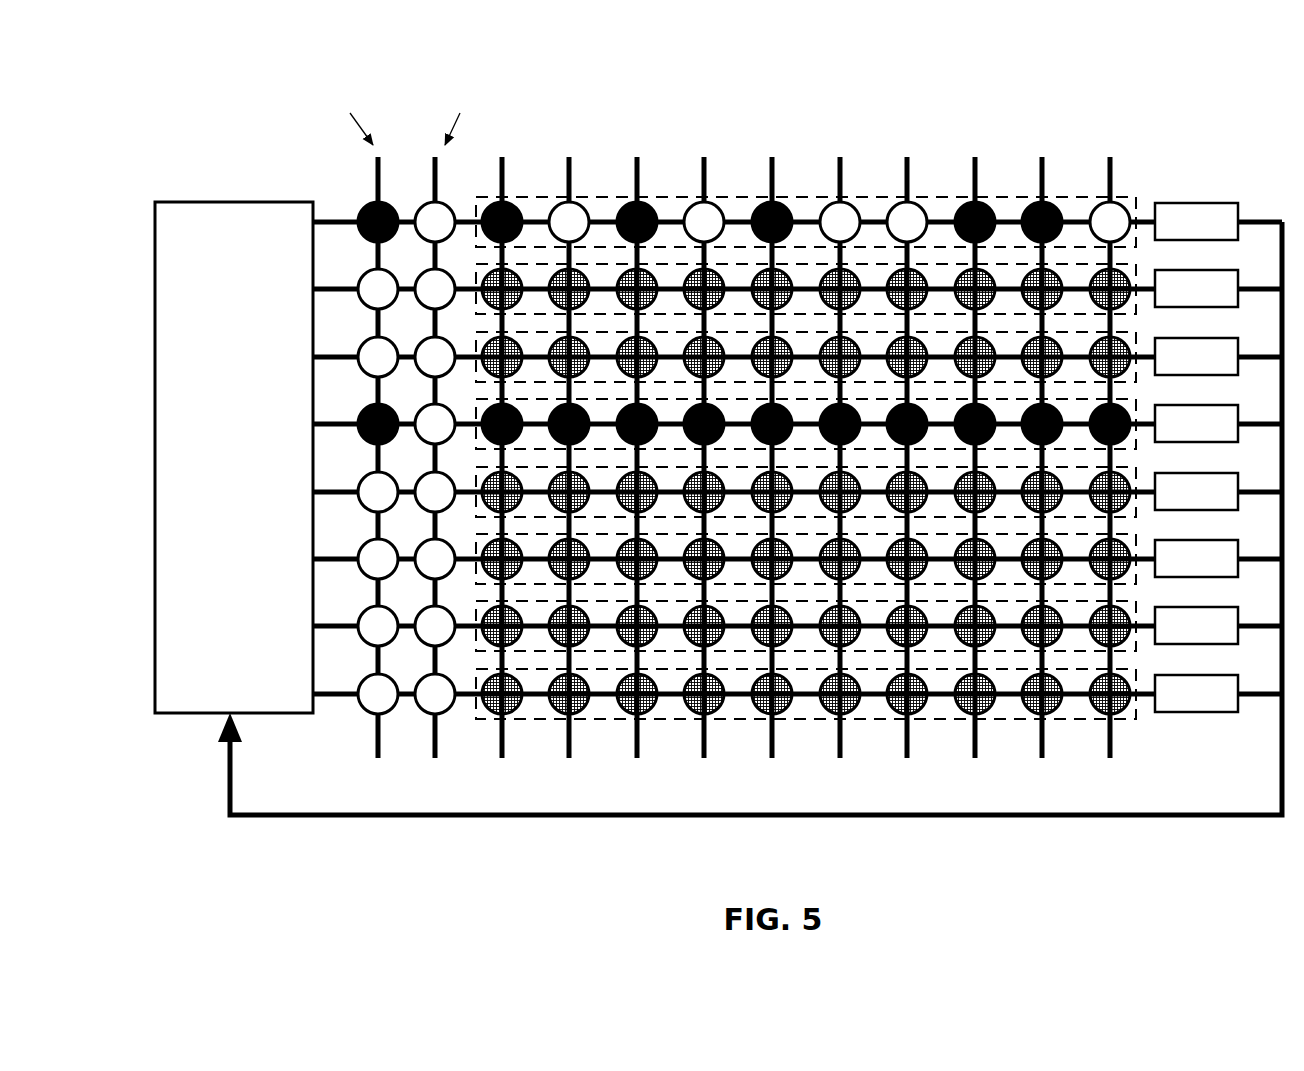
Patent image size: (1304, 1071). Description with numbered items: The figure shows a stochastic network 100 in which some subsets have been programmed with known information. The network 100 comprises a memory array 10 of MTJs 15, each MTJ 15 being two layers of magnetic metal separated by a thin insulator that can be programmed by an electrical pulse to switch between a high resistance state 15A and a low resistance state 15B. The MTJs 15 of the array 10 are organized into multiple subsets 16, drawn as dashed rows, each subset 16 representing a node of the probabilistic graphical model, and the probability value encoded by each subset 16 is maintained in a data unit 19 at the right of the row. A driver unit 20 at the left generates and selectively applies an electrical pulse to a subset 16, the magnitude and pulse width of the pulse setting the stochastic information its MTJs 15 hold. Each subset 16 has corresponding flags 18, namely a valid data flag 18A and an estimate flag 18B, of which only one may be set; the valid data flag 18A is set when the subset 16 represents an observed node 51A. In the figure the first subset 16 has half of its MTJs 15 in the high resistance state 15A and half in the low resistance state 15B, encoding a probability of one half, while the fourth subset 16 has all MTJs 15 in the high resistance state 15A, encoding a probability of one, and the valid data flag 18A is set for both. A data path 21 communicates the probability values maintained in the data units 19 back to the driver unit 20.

The stochastic network 100 is at (797, 40).
The memory array 10 is at (1140, 150).
The driver unit 20 is at (237, 200).
The data path 21 is at (1147, 816).
The flags 18 is at (405, 465).
The valid data flag 18A is at (362, 200).
The estimate flag 18B is at (447, 200).
The MTJ 15 is at (806, 457).
The high resistance state 15A is at (1053, 197).
The low resistance state 15B is at (706, 220).
The observed node 51A is at (1007, 174).
The subset 16 is at (1139, 248).
The data unit 19 is at (1227, 241).